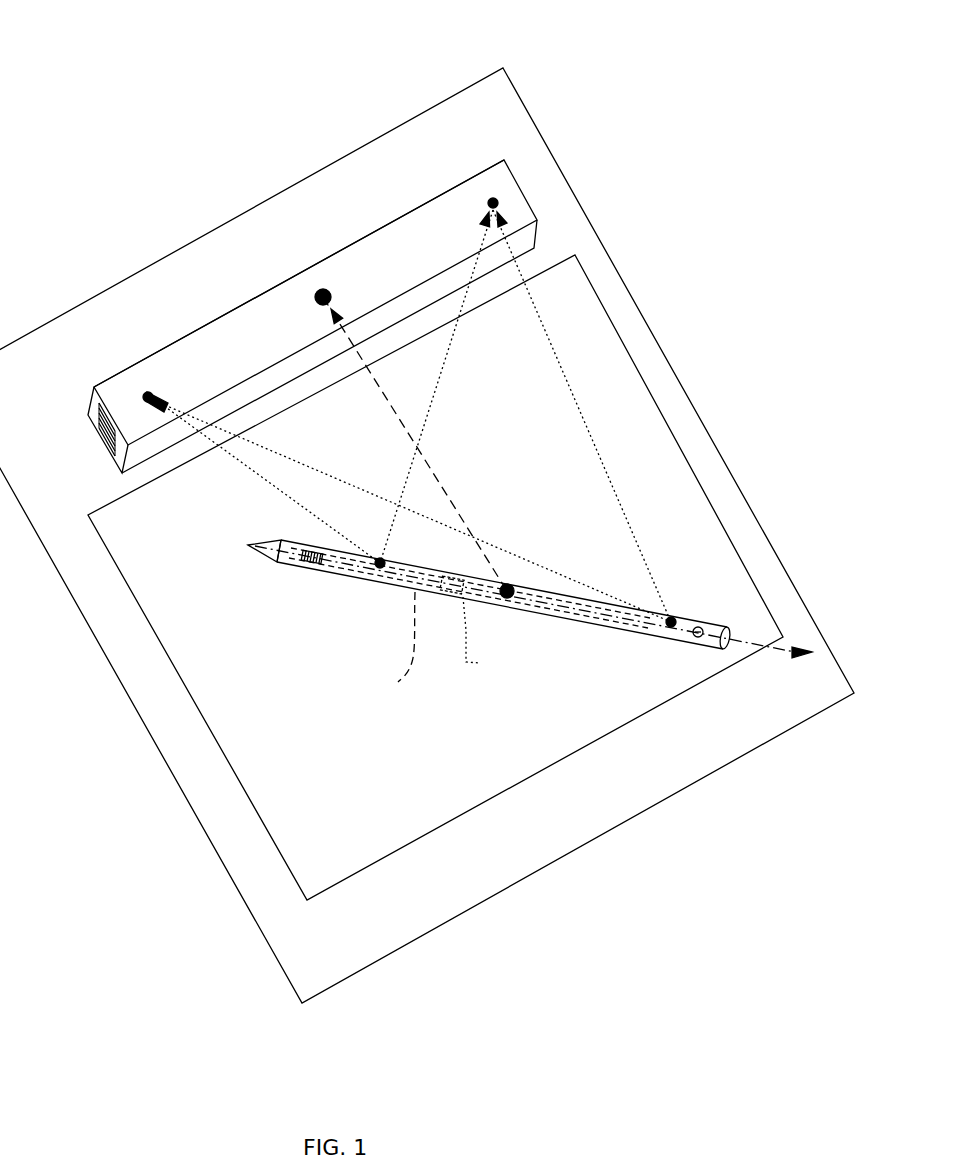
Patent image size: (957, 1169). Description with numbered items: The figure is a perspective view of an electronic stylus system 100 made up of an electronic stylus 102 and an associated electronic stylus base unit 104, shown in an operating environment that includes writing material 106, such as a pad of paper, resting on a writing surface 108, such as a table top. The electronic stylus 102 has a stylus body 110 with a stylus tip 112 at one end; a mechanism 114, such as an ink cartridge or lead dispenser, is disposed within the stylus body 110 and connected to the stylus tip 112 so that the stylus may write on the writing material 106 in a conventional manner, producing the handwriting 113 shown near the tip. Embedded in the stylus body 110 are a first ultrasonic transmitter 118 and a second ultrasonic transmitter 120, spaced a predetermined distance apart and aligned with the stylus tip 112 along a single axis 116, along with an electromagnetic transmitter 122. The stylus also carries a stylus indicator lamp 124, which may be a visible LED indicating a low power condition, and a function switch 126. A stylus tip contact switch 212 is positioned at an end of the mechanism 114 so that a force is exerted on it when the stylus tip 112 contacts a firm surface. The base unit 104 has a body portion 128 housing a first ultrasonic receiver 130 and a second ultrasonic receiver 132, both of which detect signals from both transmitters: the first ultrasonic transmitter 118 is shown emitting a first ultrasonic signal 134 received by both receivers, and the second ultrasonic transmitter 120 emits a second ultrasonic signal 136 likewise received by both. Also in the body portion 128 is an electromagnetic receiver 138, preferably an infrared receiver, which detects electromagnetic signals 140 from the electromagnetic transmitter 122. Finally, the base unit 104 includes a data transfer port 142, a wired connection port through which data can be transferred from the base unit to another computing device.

The electronic stylus system 100 is at (108, 66).
The electronic stylus 102 is at (528, 594).
The electronic stylus base unit 104 is at (380, 264).
The writing material 106 is at (273, 762).
The writing surface 108 is at (290, 938).
The stylus body 110 is at (611, 616).
The stylus tip 112 is at (262, 542).
The handwritten text 113 is at (170, 566).
The mechanism 114 is at (400, 683).
The single axis 116 is at (790, 652).
The first ultrasonic transmitter 118 is at (377, 570).
The second ultrasonic transmitter 120 is at (671, 624).
The electromagnetic transmitter 122 is at (508, 594).
The stylus indicator lamp 124 is at (698, 628).
The function switch 126 is at (305, 560).
The body portion 128 is at (263, 325).
The first ultrasonic receiver 130 is at (148, 397).
The second ultrasonic receiver 132 is at (493, 203).
The first ultrasonic signal 134 is at (240, 462).
The second ultrasonic signal 136 is at (118, 478).
The electromagnetic receiver 138 is at (323, 297).
The electromagnetic signals 140 is at (453, 505).
The data transfer port 142 is at (97, 428).
The stylus tip contact switch 212 is at (484, 624).